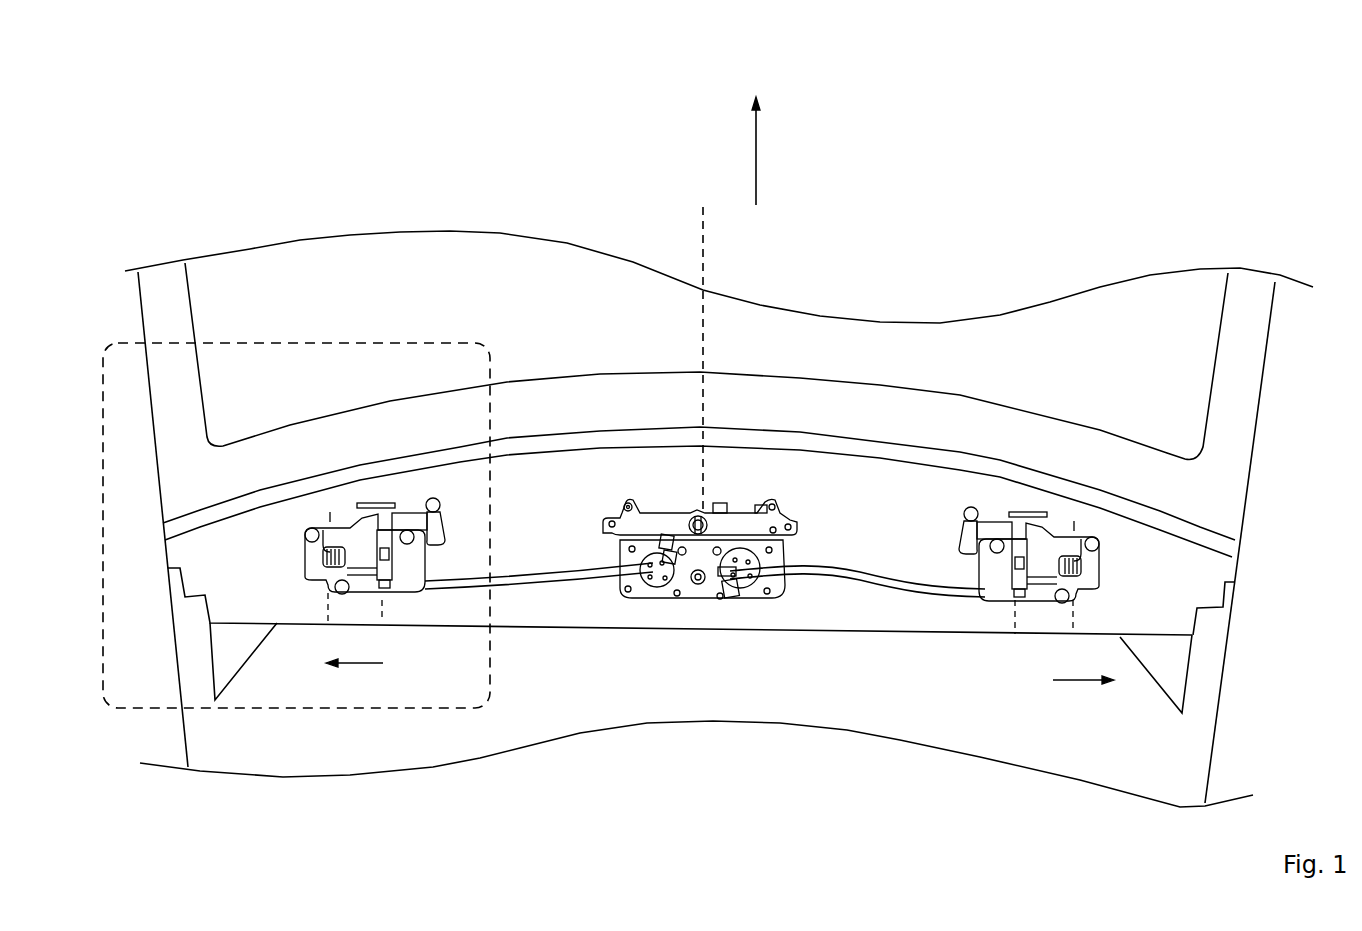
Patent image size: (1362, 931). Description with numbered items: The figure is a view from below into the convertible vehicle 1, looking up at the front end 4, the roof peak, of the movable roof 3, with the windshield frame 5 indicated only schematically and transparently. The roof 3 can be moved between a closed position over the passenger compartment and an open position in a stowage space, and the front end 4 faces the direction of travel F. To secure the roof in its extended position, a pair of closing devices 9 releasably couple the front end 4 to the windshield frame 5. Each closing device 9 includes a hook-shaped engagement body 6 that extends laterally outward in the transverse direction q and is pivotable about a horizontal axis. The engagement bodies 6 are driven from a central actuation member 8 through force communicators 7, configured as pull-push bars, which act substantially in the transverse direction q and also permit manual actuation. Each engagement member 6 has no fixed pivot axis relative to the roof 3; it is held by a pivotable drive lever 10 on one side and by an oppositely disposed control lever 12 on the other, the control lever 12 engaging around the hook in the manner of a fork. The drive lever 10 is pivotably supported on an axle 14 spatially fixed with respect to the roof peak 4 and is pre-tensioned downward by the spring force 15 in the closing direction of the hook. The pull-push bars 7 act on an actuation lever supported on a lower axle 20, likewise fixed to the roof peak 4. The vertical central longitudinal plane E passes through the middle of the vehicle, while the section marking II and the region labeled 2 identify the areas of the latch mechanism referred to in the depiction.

The convertible vehicle 1 is at (721, 464).
The closing direction 2 is at (1041, 718).
The movable roof 3 is at (1230, 637).
The front end 4 is at (875, 527).
The windshield frame 5 is at (1056, 433).
The engagement body 6 is at (385, 490).
The force communicator 7 is at (518, 586).
The actuation member 8 is at (696, 614).
The closing device 9 is at (682, 537).
The pivotable drive lever 10 is at (362, 542).
The control lever 12 is at (427, 500).
The axle 14 is at (330, 617).
The spring force 15 is at (322, 560).
The axle 20 is at (385, 588).
The detail section II is at (436, 345).
The vertical central longitudinal plane E is at (705, 252).
The direction of travel F is at (756, 152).
The transverse direction q is at (353, 663).